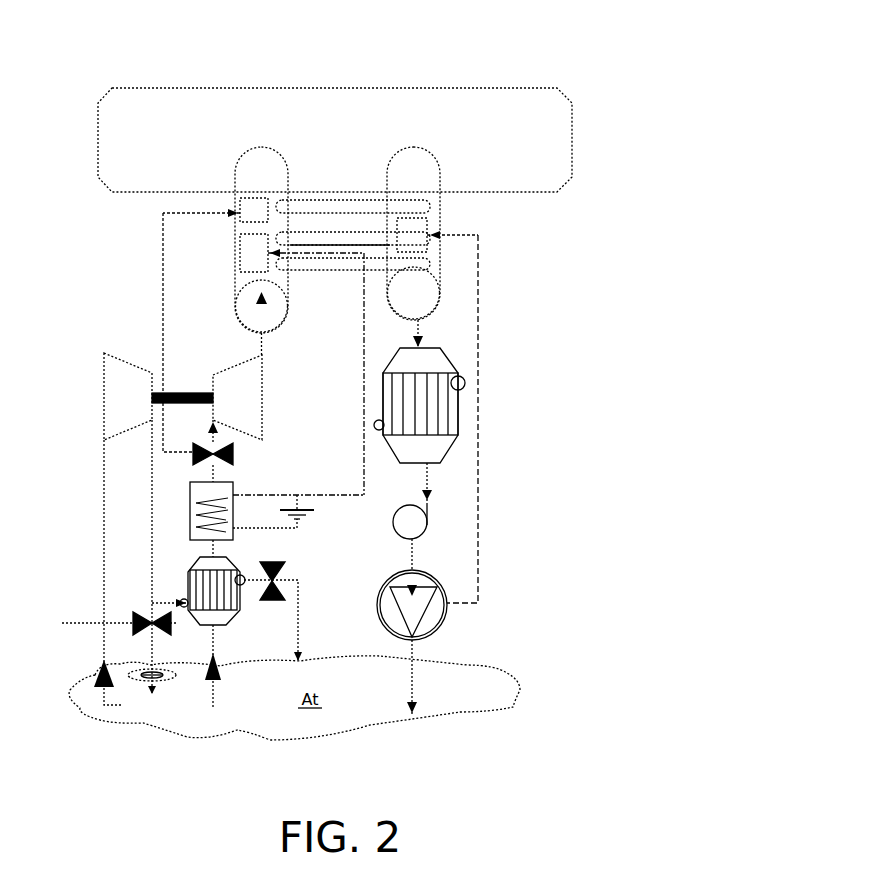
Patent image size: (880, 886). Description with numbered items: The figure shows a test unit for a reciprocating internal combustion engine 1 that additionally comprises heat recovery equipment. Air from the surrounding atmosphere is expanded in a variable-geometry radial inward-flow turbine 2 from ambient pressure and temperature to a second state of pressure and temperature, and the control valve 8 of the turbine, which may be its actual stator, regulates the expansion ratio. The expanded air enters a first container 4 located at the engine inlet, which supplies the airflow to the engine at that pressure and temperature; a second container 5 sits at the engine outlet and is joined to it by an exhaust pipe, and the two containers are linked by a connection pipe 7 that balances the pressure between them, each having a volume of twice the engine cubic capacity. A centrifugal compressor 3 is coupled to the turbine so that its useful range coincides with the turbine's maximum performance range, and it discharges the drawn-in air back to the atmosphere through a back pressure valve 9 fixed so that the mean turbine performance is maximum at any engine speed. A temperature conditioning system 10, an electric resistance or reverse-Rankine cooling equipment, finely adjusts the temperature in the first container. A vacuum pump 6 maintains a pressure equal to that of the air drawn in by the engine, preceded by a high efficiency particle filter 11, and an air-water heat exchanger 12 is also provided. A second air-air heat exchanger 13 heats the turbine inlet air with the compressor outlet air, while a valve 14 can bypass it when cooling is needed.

The reciprocating internal combustion engine 1 is at (517, 109).
The radial inward-flow turbine 2 is at (240, 381).
The centrifugal compressor 3 is at (125, 393).
The first container 4 is at (238, 253).
The second container 5 is at (438, 268).
The vacuum pump 6 is at (447, 618).
The connection pipe 7 is at (332, 208).
The control valve 8 is at (193, 453).
The back pressure valve 9 is at (270, 603).
The temperature conditioning system 10 is at (190, 529).
The particle filter 11 is at (420, 522).
The heat exchanger 12 is at (437, 410).
The second heat exchanger 13 is at (207, 620).
The valve 14 is at (108, 623).